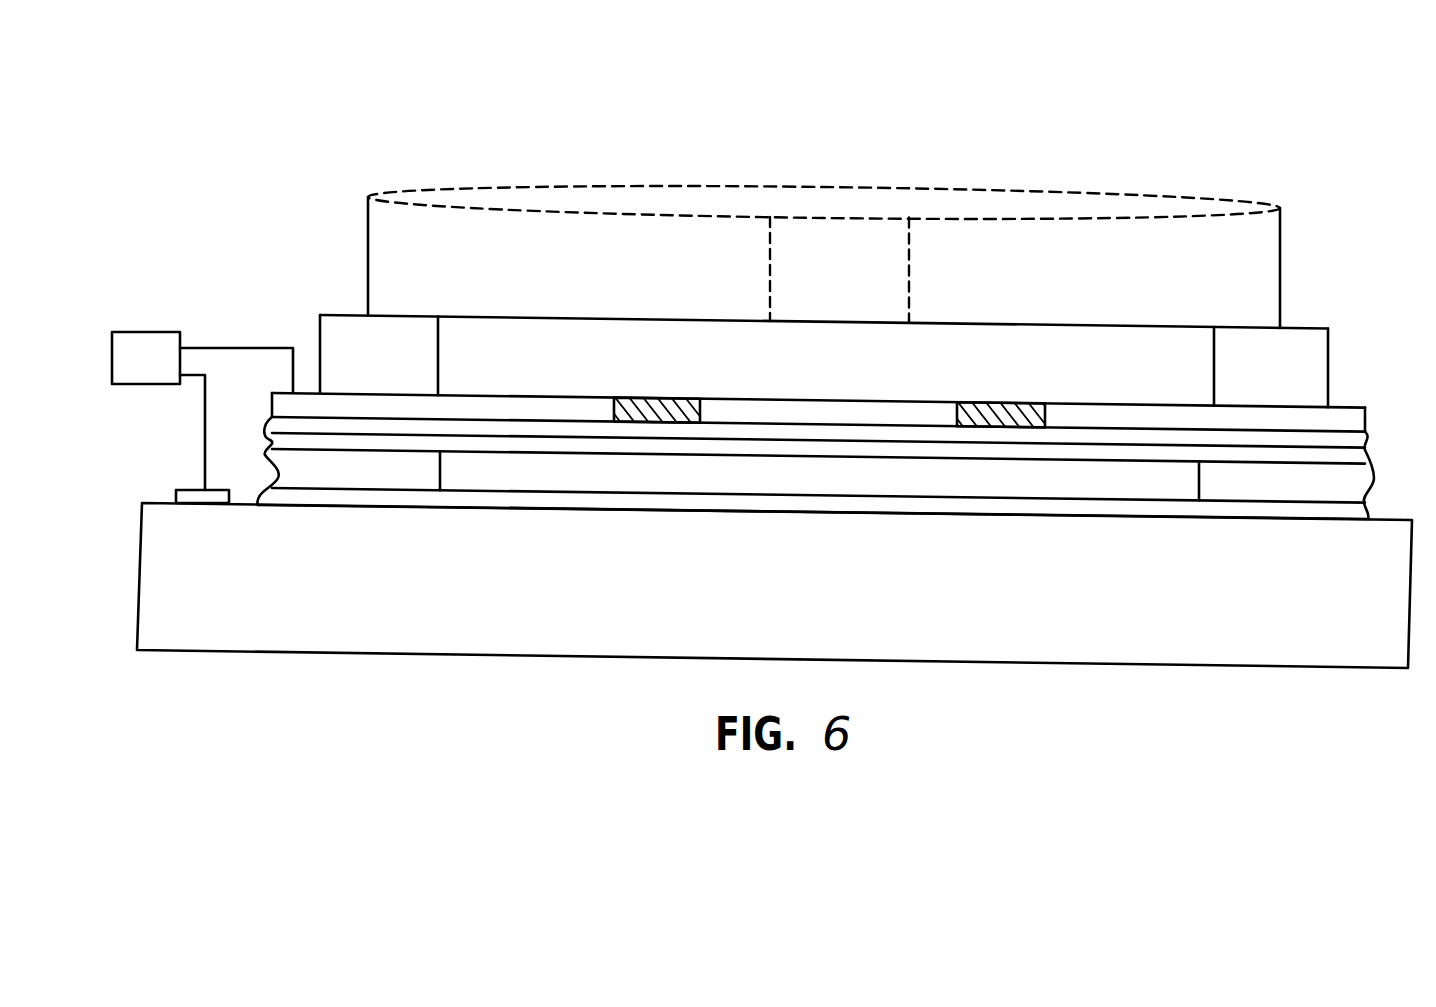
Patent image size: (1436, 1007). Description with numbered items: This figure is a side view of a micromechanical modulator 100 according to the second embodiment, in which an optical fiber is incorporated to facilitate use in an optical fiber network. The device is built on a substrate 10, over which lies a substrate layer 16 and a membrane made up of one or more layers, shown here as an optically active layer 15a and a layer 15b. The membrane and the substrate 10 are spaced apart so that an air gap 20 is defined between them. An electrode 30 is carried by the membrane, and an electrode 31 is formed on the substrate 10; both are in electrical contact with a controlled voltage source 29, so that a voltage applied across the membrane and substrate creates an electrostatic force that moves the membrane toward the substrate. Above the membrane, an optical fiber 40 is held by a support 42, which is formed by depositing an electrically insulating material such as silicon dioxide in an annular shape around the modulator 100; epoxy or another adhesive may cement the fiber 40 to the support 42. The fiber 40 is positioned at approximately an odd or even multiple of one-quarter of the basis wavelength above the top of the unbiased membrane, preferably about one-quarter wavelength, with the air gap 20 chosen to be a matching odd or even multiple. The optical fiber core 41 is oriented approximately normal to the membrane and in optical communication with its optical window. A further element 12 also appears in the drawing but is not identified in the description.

The modulator 100 is at (594, 93).
The substrate 10 is at (778, 598).
The support ring 12 is at (379, 484).
The optically active layer 15a is at (659, 433).
The layer 15b is at (547, 443).
The substrate layer 16 is at (392, 498).
The air gap 20 is at (841, 491).
The controlled voltage source 29 is at (147, 333).
The electrode 30 is at (864, 417).
The electrode 31 is at (194, 497).
The optical fiber 40 is at (368, 222).
The optical fiber core 41 is at (838, 236).
The support 42 is at (401, 373).